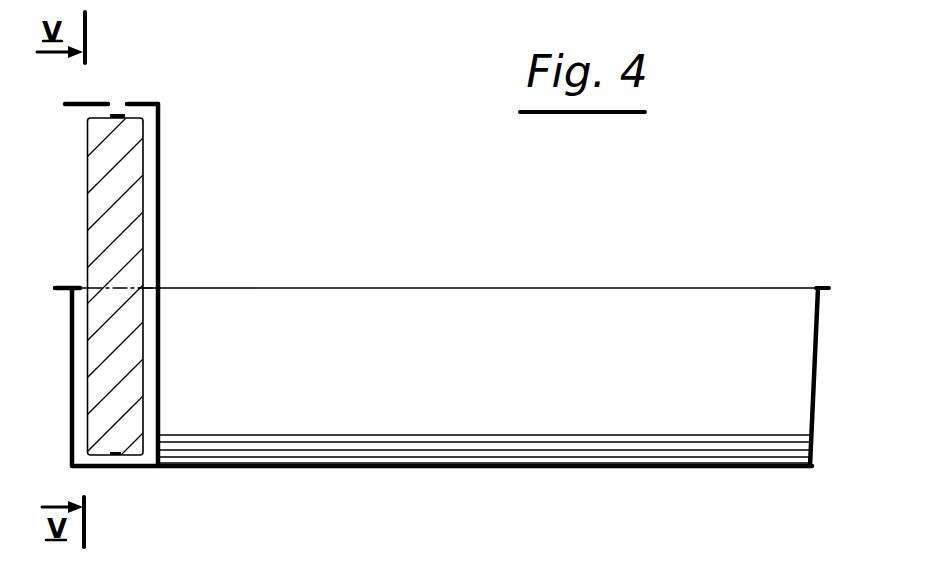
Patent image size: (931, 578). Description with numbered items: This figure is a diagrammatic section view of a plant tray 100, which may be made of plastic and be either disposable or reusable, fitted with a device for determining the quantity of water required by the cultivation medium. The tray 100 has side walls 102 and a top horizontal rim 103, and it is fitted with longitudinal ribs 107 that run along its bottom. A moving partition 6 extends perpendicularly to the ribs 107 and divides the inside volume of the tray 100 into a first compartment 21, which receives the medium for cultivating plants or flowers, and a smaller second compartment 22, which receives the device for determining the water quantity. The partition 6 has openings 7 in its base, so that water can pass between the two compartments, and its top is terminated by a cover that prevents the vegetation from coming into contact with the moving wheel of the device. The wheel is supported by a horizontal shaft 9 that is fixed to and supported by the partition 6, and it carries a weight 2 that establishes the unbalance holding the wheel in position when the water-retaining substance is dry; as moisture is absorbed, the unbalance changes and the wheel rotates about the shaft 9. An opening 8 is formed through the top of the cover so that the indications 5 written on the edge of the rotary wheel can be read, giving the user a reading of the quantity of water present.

The weight 2 is at (115, 457).
The indications 5 is at (110, 116).
The moving partition 6 is at (160, 177).
The openings 7 is at (175, 457).
The opening 8 is at (120, 100).
The horizontal shaft 9 is at (148, 287).
The first compartment 21 is at (430, 320).
The second compartment 22 is at (80, 282).
The plant tray 100 is at (759, 478).
The side walls 102 is at (785, 382).
The top horizontal rim 103 is at (824, 288).
The longitudinal ribs 107 is at (427, 468).